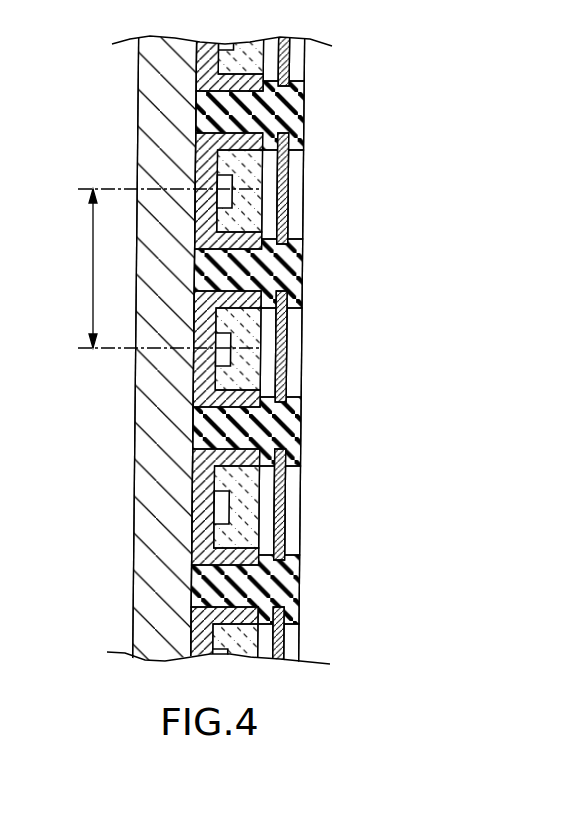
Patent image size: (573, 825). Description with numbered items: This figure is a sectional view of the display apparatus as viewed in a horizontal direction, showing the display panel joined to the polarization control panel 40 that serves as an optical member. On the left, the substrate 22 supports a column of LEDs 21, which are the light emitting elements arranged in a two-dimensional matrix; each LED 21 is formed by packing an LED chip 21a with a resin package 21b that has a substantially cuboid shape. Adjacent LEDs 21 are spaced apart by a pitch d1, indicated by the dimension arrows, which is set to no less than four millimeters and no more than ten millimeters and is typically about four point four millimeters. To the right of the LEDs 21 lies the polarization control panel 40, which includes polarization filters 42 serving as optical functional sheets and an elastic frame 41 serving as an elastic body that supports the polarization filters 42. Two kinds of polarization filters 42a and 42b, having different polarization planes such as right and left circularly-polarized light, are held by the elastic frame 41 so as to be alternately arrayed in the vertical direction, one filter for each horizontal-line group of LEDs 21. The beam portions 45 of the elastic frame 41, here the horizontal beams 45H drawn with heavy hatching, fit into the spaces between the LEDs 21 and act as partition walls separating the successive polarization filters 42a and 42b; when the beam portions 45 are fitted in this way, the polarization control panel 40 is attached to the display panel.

The substrate 22 is at (150, 73).
The LED 21 is at (197, 153).
The LED chip 21a is at (198, 356).
The resin package 21b is at (198, 384).
The polarization control panel 40 is at (251, 350).
The elastic frame 41 is at (305, 167).
The polarization filter 42 is at (349, 352).
The polarization filter 42a is at (290, 60).
The polarization filter 42b is at (290, 195).
The beam portion 45 is at (313, 352).
The horizontal beam 45H is at (290, 112).
The pitch d1 is at (160, 268).